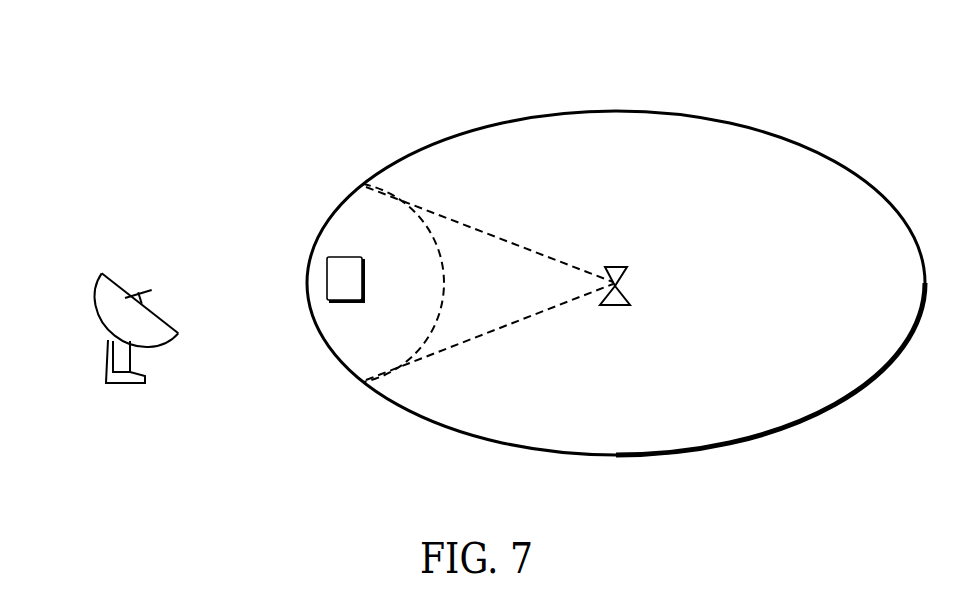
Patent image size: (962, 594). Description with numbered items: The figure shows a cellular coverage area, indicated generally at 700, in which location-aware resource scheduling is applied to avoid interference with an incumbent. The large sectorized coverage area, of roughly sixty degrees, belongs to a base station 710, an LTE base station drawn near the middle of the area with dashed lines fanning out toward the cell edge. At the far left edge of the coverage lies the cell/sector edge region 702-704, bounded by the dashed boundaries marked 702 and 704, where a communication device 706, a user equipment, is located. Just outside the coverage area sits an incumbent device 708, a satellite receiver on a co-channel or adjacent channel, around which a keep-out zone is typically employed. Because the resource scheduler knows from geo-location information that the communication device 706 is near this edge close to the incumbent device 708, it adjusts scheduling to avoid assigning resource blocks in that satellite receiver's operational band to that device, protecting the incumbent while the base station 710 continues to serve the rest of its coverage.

The cellular coverage area / system 700 is at (757, 62).
The region boundary 702 is at (377, 350).
The region boundary 704 is at (372, 207).
The communication device 706 is at (327, 278).
The incumbent device 708 is at (106, 363).
The base station 710 is at (626, 292).